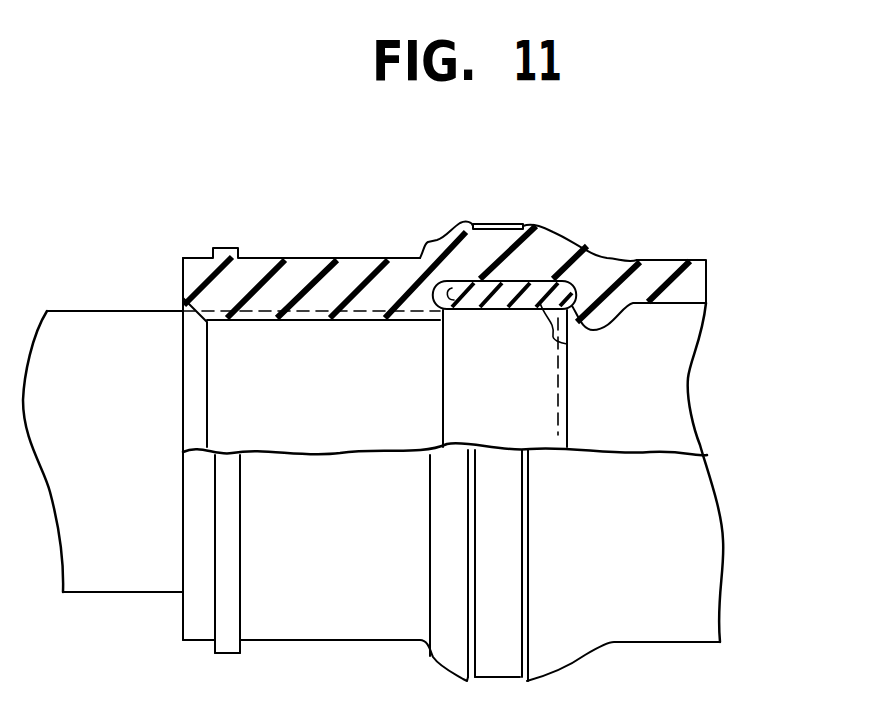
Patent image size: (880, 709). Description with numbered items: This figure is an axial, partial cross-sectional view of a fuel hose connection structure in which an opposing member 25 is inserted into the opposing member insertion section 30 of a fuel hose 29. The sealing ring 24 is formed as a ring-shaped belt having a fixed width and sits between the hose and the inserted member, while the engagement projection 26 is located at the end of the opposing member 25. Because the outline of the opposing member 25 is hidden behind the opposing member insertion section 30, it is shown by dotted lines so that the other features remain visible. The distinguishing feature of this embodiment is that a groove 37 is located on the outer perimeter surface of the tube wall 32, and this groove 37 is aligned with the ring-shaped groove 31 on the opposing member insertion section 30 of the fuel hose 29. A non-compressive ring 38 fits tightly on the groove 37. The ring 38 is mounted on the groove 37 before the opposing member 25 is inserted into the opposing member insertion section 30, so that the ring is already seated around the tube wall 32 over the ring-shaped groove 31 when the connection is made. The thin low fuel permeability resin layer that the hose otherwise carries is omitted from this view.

The sealing ring 24 is at (470, 301).
The opposing member 25 is at (563, 407).
The engagement projection 26 is at (574, 345).
The fuel hose 29 is at (645, 249).
The opposing member insertion section 30 is at (298, 273).
The ring-shaped groove 31 is at (545, 253).
The tube wall 32 is at (440, 239).
The groove 37 is at (523, 226).
The non-compressive ring 38 is at (488, 226).